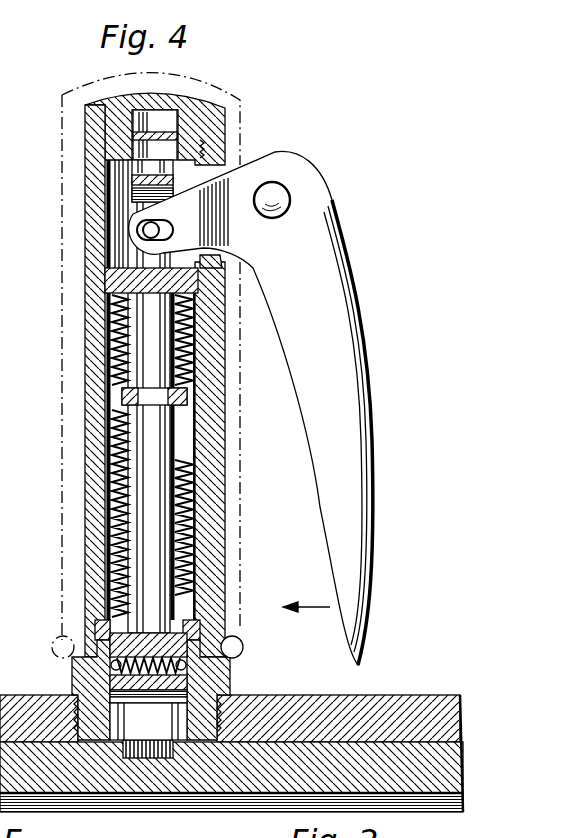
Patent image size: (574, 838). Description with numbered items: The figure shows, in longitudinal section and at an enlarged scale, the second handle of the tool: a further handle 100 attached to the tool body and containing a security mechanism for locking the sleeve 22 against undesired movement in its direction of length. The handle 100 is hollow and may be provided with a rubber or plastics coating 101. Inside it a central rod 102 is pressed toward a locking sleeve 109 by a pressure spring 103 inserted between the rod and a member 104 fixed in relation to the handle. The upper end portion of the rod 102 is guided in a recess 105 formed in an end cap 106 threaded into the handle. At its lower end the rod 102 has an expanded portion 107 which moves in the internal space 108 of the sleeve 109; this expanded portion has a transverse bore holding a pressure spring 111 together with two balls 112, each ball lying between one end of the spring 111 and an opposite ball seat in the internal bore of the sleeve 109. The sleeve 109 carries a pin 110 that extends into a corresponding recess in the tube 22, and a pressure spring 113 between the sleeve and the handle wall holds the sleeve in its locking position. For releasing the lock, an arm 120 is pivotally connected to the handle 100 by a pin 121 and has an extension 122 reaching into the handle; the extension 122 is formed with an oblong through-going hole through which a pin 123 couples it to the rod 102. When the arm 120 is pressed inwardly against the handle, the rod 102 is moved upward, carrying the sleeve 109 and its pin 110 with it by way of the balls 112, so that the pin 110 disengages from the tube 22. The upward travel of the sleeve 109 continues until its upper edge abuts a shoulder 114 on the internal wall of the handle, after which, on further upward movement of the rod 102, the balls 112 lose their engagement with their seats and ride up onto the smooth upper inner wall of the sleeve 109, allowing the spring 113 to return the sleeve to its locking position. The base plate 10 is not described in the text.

The base plate 10 is at (405, 695).
The sleeve 22 is at (440, 770).
The handle 100 is at (122, 398).
The rubber or plastics coating 101 is at (65, 332).
The central rod 102 is at (148, 448).
The pressure spring 103 is at (113, 382).
The member 104 is at (105, 270).
The recess 105 is at (172, 123).
The end cap 106 is at (84, 101).
The expanded portion 107 is at (108, 640).
The internal space 108 is at (96, 625).
The sleeve 109 is at (112, 740).
The pin 110 is at (152, 750).
The pressure spring 111 is at (243, 630).
The balls 112 is at (112, 666).
The pressure spring 113 is at (112, 508).
The shoulder 114 is at (203, 582).
The arm 120 is at (345, 428).
The pin 121 is at (292, 204).
The extension 122 is at (214, 140).
The pin 123 is at (137, 231).